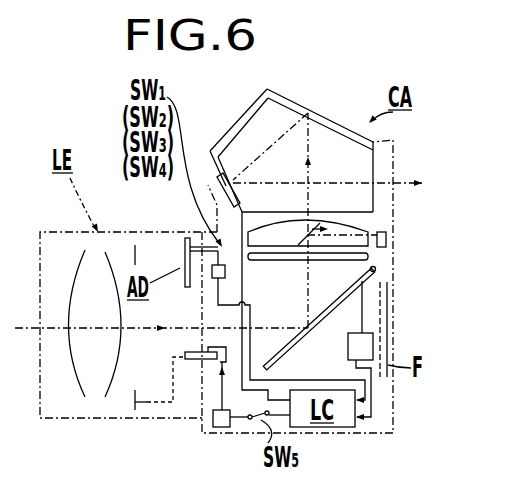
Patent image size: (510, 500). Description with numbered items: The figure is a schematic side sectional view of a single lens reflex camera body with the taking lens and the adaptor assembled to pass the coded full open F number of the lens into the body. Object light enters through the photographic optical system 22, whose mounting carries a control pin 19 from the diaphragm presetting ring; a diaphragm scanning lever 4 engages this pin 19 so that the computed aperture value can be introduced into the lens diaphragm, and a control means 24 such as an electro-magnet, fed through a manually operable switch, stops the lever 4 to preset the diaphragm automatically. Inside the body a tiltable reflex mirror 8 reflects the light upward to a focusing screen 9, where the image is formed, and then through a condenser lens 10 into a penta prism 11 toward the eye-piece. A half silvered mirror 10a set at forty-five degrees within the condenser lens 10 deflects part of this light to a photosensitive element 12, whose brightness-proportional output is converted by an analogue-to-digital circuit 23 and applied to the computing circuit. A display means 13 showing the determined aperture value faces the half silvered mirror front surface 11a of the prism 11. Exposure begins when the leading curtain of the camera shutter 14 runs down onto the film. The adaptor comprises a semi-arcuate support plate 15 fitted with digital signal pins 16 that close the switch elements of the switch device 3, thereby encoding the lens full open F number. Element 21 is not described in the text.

The switch device 3 is at (227, 240).
The diaphragm scanning lever 4 is at (221, 392).
The reflex mirror 8 is at (342, 300).
The focusing screen 9 is at (368, 283).
The condenser lens 10 is at (343, 257).
The half silvered mirror 10a is at (365, 227).
The penta prism 11 is at (287, 117).
The half silvered mirror front surface 11a is at (232, 158).
The photosensitive element 12 is at (388, 238).
The display means 13 is at (220, 172).
The camera shutter 14 is at (380, 378).
The support plate 15 is at (187, 287).
The digital signal pins 16 is at (183, 245).
The control pin 19 is at (200, 362).
The diaphragm stop 21 is at (133, 408).
The photographic optical system 22 is at (72, 357).
The analogue-to-digital circuit 23 is at (348, 347).
The control means 24 is at (231, 426).